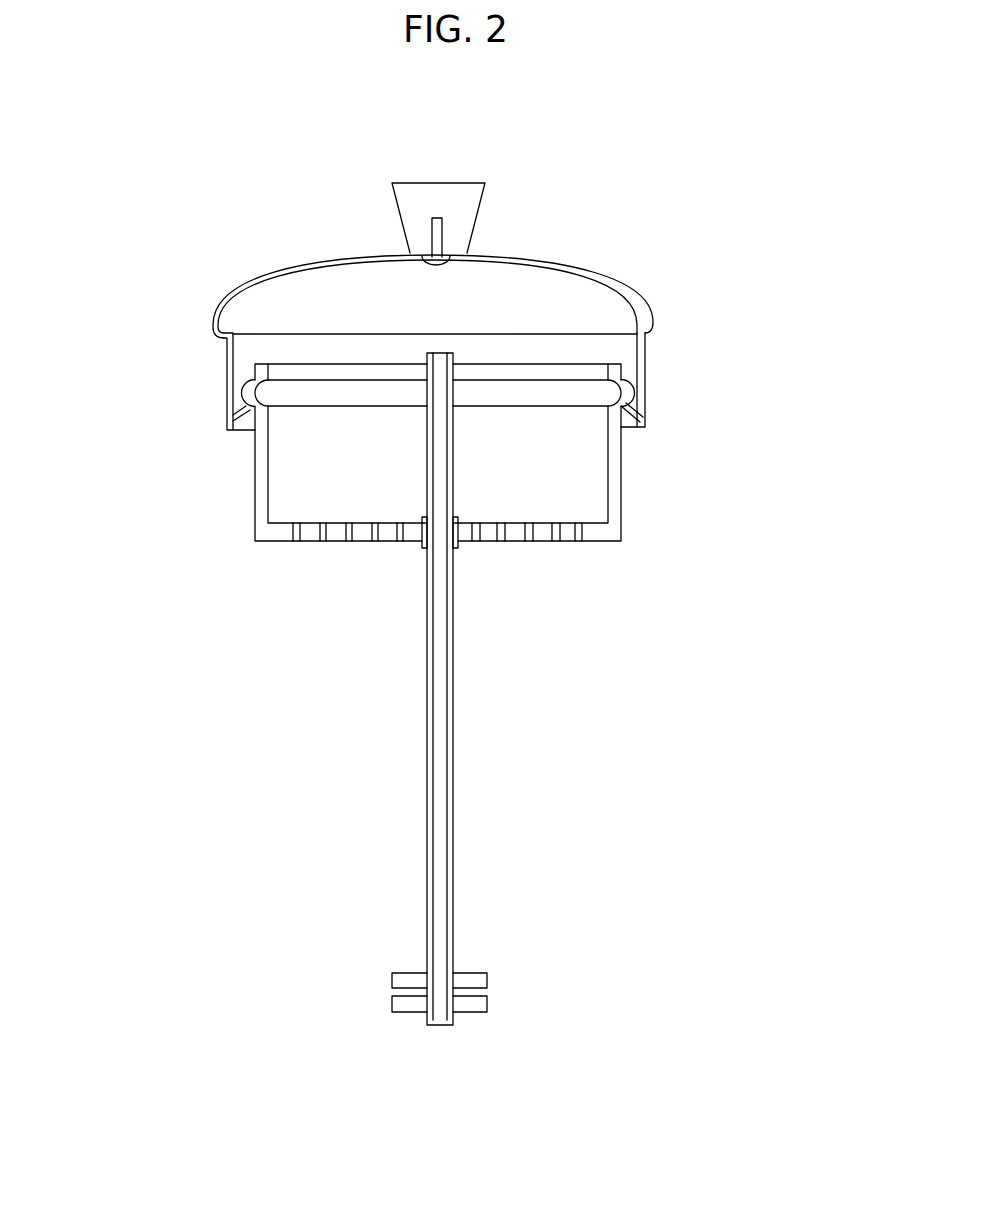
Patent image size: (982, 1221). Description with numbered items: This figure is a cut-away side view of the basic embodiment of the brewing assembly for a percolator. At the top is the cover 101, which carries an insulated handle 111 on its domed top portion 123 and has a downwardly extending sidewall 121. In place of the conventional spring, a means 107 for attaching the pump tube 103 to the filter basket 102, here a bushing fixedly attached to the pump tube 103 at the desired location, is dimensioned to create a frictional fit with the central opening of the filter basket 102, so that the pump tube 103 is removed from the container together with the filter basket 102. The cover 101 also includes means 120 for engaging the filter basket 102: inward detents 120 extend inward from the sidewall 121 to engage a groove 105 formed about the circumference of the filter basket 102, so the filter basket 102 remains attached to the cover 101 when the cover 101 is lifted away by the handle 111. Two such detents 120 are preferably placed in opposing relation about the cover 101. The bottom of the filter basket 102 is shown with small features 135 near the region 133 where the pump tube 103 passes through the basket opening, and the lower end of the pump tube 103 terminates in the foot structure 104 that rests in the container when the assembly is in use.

The cover 101 is at (494, 324).
The insulated handle 111 is at (467, 203).
The dome cover 123 is at (563, 267).
The sidewall 121 is at (642, 382).
The inward detents 120 is at (642, 420).
The groove 105 is at (240, 393).
The filter basket 102 is at (615, 523).
The bottom ribs 135 is at (322, 533).
The shaft bearing 133 is at (423, 527).
The means for attaching the pump tube to the filter basket 107 is at (457, 547).
The pump tube 103 is at (452, 777).
The paddles 104 is at (400, 980).